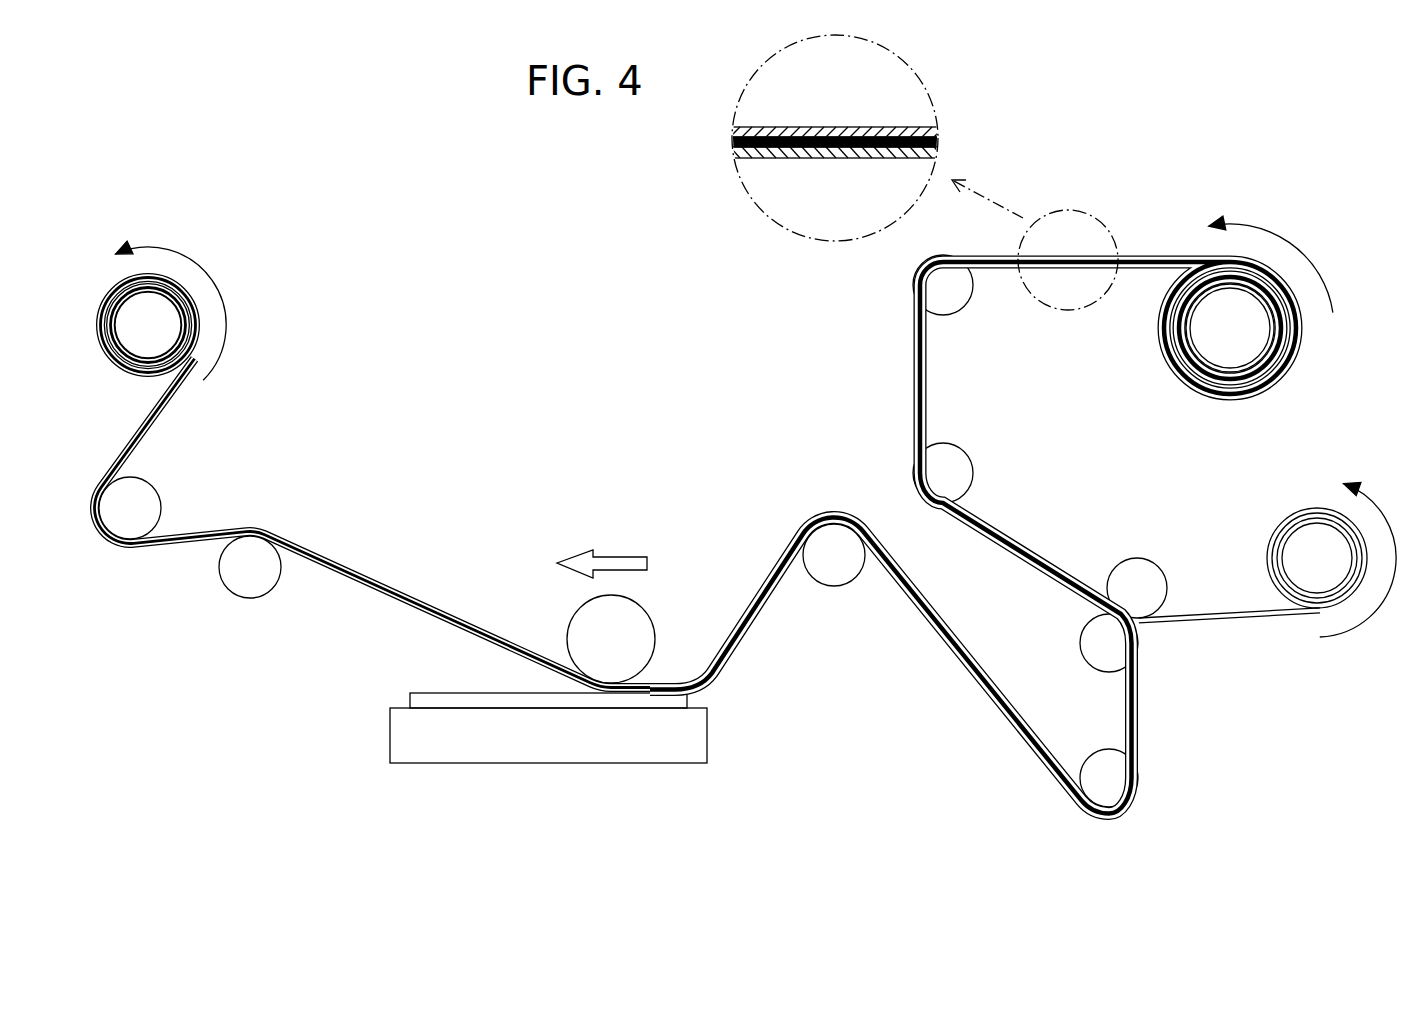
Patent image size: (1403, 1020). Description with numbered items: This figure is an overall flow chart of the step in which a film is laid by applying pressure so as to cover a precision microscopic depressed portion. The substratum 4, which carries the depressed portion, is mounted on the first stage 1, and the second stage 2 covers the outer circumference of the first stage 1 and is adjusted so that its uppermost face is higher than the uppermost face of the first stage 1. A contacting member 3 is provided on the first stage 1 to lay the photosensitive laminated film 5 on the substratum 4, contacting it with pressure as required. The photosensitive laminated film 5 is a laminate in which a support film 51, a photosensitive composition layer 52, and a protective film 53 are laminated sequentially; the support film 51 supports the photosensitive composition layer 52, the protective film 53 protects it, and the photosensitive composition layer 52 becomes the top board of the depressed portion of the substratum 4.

The first stage 1 is at (548, 778).
The second stage 2 is at (628, 752).
The contacting member 3 is at (642, 633).
The substratum 4 is at (418, 700).
The photosensitive laminated film 5 is at (767, 607).
The support film 51 is at (804, 127).
The photosensitive composition layer 52 is at (855, 127).
The protective film 53 is at (815, 158).